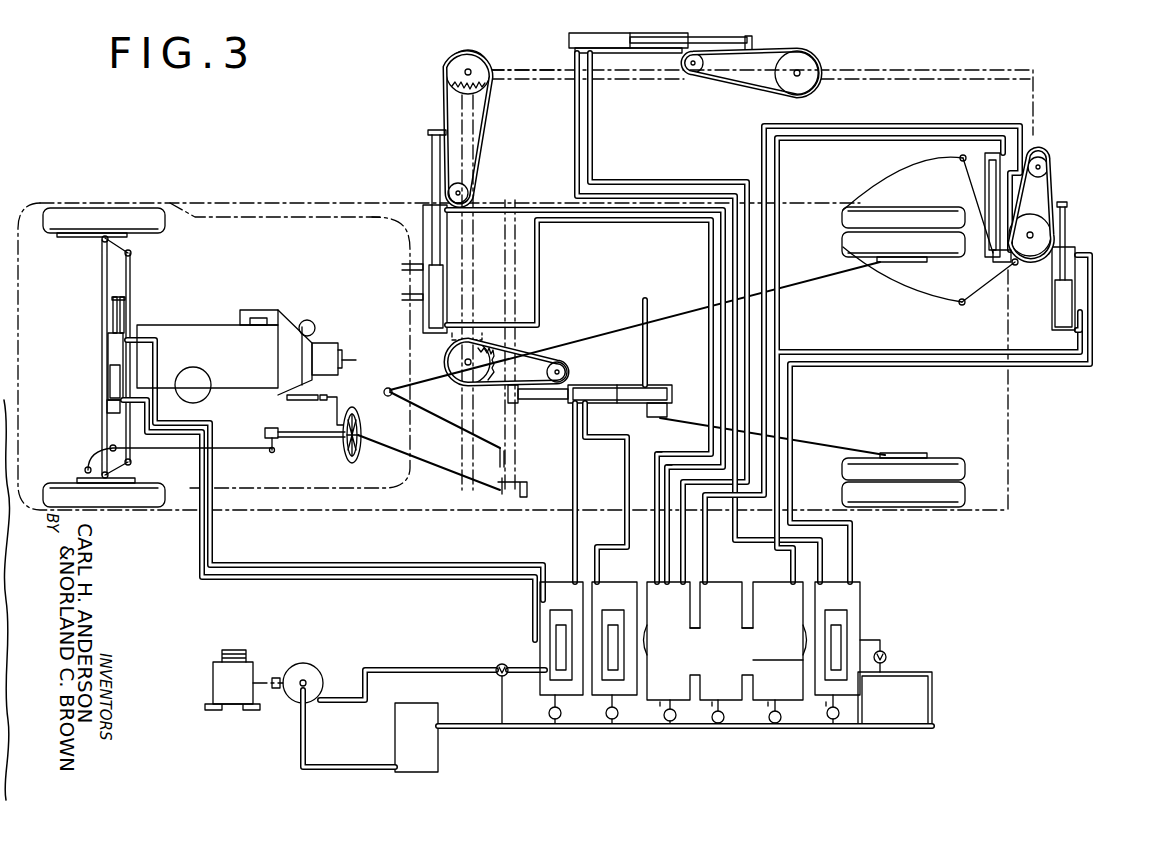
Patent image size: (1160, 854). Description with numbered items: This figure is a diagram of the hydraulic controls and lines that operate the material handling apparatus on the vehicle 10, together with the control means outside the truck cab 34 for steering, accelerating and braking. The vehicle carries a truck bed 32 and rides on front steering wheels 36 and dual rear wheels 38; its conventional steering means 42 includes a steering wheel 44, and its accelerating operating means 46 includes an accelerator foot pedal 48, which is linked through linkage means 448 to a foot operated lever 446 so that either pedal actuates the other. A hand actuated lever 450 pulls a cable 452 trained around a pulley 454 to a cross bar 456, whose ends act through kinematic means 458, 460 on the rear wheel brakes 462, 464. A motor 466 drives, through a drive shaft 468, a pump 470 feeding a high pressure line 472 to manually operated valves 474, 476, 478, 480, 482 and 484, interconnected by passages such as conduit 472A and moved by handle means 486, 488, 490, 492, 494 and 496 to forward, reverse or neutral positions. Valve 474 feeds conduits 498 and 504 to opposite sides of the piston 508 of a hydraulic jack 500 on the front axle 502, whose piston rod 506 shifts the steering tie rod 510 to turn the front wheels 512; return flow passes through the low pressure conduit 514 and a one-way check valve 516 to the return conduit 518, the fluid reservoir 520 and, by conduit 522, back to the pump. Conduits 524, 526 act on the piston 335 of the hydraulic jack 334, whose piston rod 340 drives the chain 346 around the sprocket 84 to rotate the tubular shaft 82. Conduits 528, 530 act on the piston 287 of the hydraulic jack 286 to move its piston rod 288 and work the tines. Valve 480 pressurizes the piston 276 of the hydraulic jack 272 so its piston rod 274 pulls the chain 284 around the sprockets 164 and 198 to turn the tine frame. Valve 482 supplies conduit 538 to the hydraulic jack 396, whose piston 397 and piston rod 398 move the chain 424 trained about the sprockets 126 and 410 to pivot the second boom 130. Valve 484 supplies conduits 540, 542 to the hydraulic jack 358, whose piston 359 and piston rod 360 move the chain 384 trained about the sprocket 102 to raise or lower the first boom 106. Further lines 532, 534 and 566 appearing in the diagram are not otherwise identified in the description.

The vehicle 10 is at (305, 168).
The truck bed 32 is at (1010, 492).
The truck cab 34 is at (374, 212).
The front steering wheels 36 is at (80, 240).
The dual rear wheels 38 is at (924, 208).
The steering means 42 is at (260, 455).
The steering wheel 44 is at (352, 463).
The accelerating operating means 46 is at (296, 404).
The accelerator foot pedal 48 is at (335, 403).
The hollow tubular rotatable shaft 82 is at (466, 292).
The sprocket 84 is at (482, 330).
The sprocket 102 is at (472, 58).
The first hollow tubular boom 106 is at (520, 65).
The sprocket 126 is at (812, 90).
The second hollow tubular boom 130 is at (935, 70).
The sprocket 164 is at (1026, 262).
The sprocket 198 is at (1044, 158).
The hydraulic jack 272 is at (1060, 300).
The piston rod 274 is at (1066, 222).
The piston 276 is at (1078, 262).
The chain 284 is at (1052, 195).
The second hydraulic jack 286 is at (980, 204).
The piston 287 is at (992, 124).
The piston rod 288 is at (992, 252).
The hydraulic jack or motor 334 is at (654, 385).
The piston 335 is at (647, 410).
The piston rod 340 is at (566, 364).
The chain 346 is at (530, 348).
The hydraulic jack or motor 358 is at (423, 297).
The piston 359 is at (423, 267).
The piston rod 360 is at (425, 170).
The chain 384 is at (490, 128).
The hydraulic jack or motor 396 is at (618, 30).
The piston 397 is at (632, 32).
The piston rod 398 is at (712, 38).
The sprocket 410 is at (694, 74).
The chain 424 is at (750, 92).
The foot operated lever 446 is at (522, 490).
The linkage means 448 is at (462, 475).
The hand actuated lever 450 is at (505, 455).
The cable 452 is at (450, 418).
The pulley 454 is at (388, 388).
The cross bar 456 is at (650, 334).
The kinematic means 458 is at (800, 282).
The kinematic means 460 is at (812, 440).
The rear wheel brake 462 is at (900, 272).
The rear wheel brake 464 is at (905, 452).
The motor 466 is at (198, 684).
The drive shaft 468 is at (286, 668).
The pump 470 is at (312, 665).
The high pressure line 472 is at (372, 668).
The interconnecting passage or conduit 472A is at (582, 730).
The manually operated valve 474 is at (508, 678).
The manually operated valve 476 is at (640, 726).
The manually operated valve 478 is at (710, 724).
The manually operated valve 480 is at (748, 728).
The manually operated valve 482 is at (792, 700).
The manually operated valve 484 is at (868, 704).
The control handle means 486 is at (560, 724).
The control handle means 488 is at (616, 722).
The control handle means 490 is at (682, 726).
The control handle means 492 is at (730, 726).
The control handle means 494 is at (786, 726).
The control handle means 496 is at (850, 724).
The conduit 498 is at (520, 578).
The hydraulic jack 500 is at (110, 380).
The front axle 502 is at (112, 400).
The conduit 504 is at (440, 575).
The reciprocating piston rod 506 is at (113, 315).
The piston 508 is at (110, 348).
The steering tie rod 510 is at (132, 280).
The front wheels 512 is at (140, 205).
The low pressure conduit 514 is at (872, 640).
The one-way check valve 516 is at (888, 658).
The fluid return conduit 518 is at (938, 708).
The fluid reservoir 520 is at (408, 706).
The conduit 522 is at (318, 760).
The conduit 524 is at (570, 525).
The conduit 526 is at (590, 540).
The conduit 528 is at (654, 466).
The conduit 530 is at (666, 480).
The conduit 532 is at (826, 350).
The conduit 534 is at (924, 354).
The conduit 538 is at (698, 180).
The conduit 540 is at (592, 224).
The conduit 542 is at (634, 228).
The conduit 566 is at (648, 194).